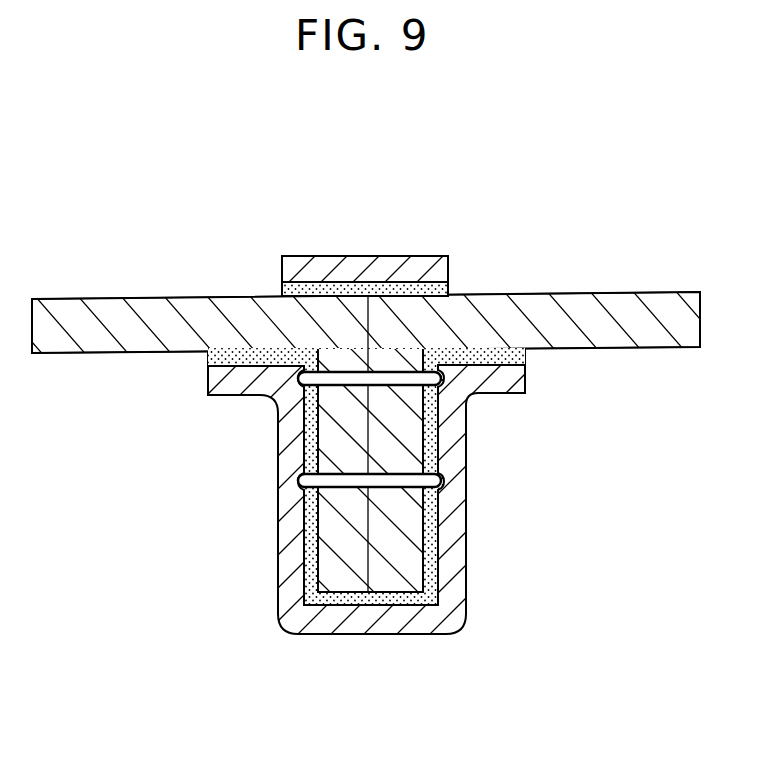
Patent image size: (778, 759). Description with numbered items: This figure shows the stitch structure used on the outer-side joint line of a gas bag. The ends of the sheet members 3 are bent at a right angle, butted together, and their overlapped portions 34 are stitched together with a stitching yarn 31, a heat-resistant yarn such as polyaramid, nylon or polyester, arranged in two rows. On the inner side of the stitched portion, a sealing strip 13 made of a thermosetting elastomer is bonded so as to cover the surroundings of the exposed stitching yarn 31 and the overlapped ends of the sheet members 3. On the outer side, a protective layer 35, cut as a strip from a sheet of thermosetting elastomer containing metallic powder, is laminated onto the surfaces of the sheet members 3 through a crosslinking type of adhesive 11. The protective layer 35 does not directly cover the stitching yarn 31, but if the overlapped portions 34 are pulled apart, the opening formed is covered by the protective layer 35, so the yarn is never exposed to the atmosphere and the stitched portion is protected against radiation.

The sheet member 3 is at (99, 306).
The crosslinking type adhesive 11 is at (281, 292).
The sealing strip 13 is at (292, 606).
The stitching yarn 31 is at (395, 478).
The overlapped portions 34 is at (402, 556).
The protective layer 35 is at (359, 267).